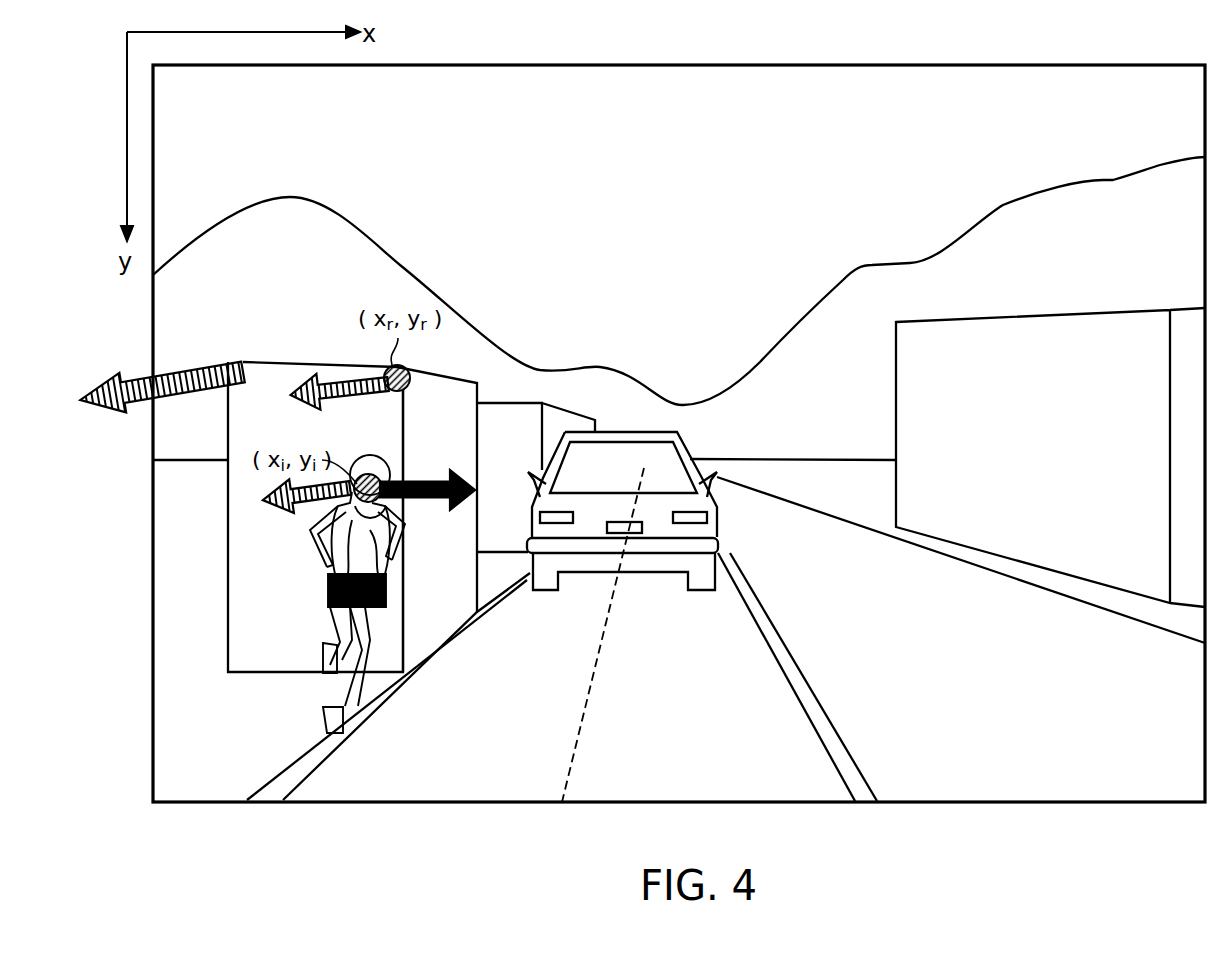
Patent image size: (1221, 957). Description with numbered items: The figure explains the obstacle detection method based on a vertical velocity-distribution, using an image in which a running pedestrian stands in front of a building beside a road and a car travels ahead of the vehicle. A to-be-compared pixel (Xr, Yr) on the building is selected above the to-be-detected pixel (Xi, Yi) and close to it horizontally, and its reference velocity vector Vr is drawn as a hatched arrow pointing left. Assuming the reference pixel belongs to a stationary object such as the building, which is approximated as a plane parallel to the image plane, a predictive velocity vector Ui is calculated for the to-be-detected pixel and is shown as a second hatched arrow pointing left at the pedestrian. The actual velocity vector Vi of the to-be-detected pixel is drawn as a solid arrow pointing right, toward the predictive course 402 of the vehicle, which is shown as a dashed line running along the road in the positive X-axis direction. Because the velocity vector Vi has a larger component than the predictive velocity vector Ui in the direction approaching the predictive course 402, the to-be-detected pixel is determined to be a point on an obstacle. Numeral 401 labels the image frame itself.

The image 401 is at (447, 65).
The predictive course 402 is at (592, 712).
The to-be-compared velocity vector Vr is at (339, 399).
The predictive velocity vector Ui is at (305, 506).
The velocity vector Vi is at (427, 477).